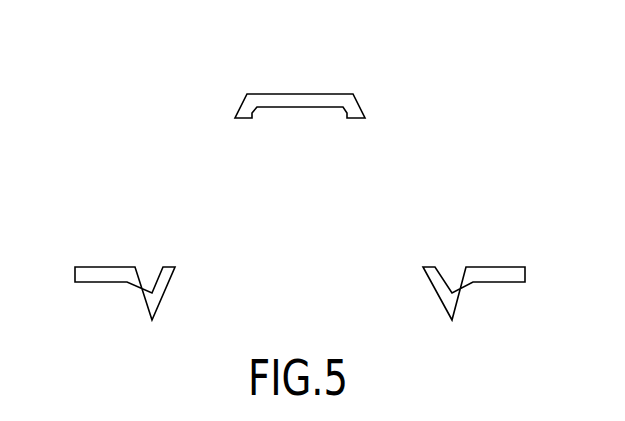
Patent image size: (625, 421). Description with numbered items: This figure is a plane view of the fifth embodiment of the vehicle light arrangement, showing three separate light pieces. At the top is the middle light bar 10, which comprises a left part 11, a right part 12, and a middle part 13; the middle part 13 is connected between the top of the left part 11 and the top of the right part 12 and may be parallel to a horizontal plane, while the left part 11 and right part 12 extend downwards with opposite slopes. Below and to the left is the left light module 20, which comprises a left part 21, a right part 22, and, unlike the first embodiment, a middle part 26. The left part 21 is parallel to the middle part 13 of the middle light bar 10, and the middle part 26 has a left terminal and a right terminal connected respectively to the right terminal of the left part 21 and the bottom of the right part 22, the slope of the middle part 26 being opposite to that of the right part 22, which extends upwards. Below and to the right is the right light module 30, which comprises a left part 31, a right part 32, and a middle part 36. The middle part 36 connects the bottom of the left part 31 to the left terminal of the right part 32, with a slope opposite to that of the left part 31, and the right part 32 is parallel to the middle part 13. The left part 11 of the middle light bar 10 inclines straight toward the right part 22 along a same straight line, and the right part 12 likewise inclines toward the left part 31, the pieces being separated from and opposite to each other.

The middle light bar 10 is at (273, 64).
The left part 11 is at (242, 110).
The right part 12 is at (362, 108).
The middle part 13 is at (305, 98).
The left light module 20 is at (88, 249).
The left part 21 is at (95, 277).
The right part 22 is at (168, 275).
The middle part 26 is at (142, 297).
The right light module 30 is at (490, 226).
The left part 31 is at (433, 282).
The right part 32 is at (513, 272).
The middle part 36 is at (458, 290).